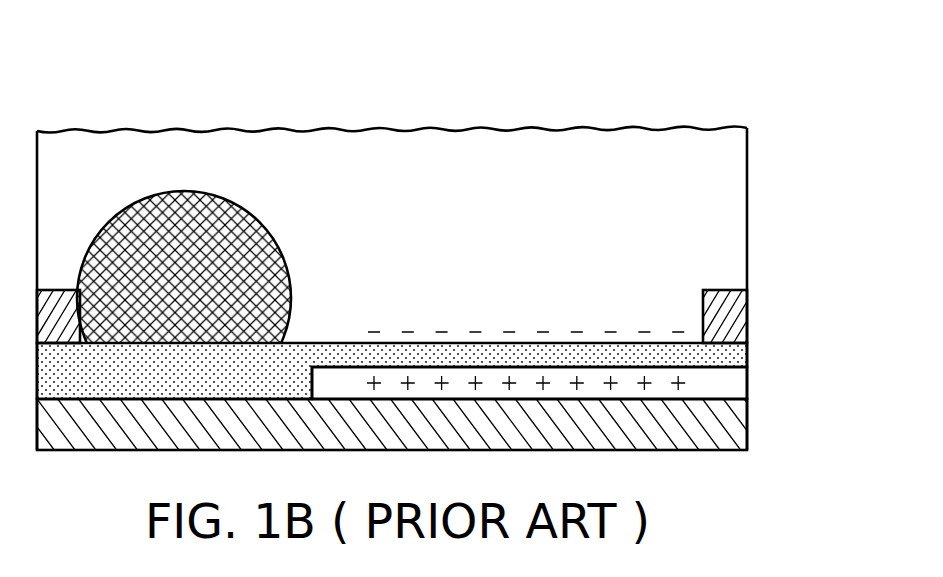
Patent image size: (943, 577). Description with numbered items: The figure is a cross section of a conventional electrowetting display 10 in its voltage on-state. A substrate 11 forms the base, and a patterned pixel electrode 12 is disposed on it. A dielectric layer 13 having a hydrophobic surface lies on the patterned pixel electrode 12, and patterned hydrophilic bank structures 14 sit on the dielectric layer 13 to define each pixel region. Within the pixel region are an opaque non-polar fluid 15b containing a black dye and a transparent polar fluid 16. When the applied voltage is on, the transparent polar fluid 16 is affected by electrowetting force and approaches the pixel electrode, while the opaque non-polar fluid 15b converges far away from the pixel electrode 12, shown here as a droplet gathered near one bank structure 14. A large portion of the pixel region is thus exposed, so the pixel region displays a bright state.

The electrowetting display 10 is at (768, 92).
The substrate 11 is at (740, 425).
The patterned pixel electrode 12 is at (740, 383).
The dielectric layer 13 is at (740, 353).
The patterned hydrophilic bank structures 14 is at (740, 318).
The opaque non-polar fluid 15b is at (184, 210).
The transparent polar fluid 16 is at (740, 186).